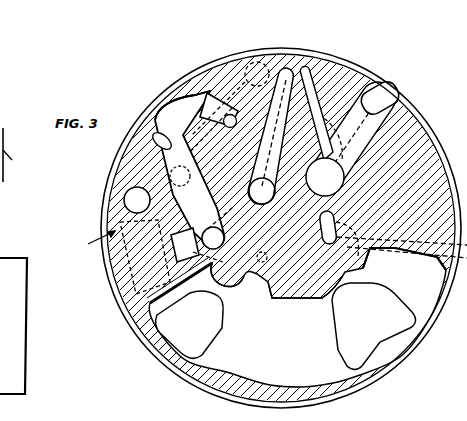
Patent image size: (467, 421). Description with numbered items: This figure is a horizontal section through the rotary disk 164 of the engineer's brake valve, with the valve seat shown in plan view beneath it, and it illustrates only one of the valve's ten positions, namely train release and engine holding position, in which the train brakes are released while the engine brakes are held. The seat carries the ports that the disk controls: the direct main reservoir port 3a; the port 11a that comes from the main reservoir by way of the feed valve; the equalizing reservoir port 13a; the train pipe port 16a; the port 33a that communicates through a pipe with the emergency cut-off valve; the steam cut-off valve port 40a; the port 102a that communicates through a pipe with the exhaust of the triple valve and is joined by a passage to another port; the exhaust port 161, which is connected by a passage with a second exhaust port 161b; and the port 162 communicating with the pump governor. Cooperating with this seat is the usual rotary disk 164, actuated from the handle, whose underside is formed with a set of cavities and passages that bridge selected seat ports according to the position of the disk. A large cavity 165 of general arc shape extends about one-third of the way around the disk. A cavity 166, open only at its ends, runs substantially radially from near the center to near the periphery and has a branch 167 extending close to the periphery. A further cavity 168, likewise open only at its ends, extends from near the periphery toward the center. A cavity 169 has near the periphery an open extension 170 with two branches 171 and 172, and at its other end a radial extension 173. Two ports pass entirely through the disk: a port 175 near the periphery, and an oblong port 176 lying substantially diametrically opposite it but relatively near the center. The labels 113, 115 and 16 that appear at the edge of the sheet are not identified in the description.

The direct main reservoir port 3a is at (176, 251).
The feed valve port 11a is at (190, 324).
The equalizing reservoir port 13a is at (160, 122).
The train pipe port 16a is at (374, 326).
The lobe 16 is at (6, 351).
The emergency cut-off valve port 33a is at (225, 238).
The steam cut-off valve port 40a is at (266, 259).
The triple valve exhaust port 102a is at (262, 63).
The link 113 is at (19, 155).
The housing member 115 is at (13, 326).
The exhaust port 161 is at (385, 99).
The second exhaust port 161b is at (268, 204).
The pump governor port 162 is at (328, 245).
The rotary disk 164 is at (80, 243).
The large arc-shaped cavity 165 is at (296, 317).
The radial cavity 166 is at (351, 138).
The branch of radial cavity 167 is at (269, 217).
The end-open cavity 168 is at (270, 136).
The cavity with extensions 169 is at (170, 178).
The open extension 170 is at (187, 169).
The first branch of open extension 171 is at (202, 92).
The second branch of open extension 172 is at (240, 92).
The radial extension 173 is at (241, 283).
The peripheral through port 175 is at (124, 203).
The oblong port 176 is at (362, 250).